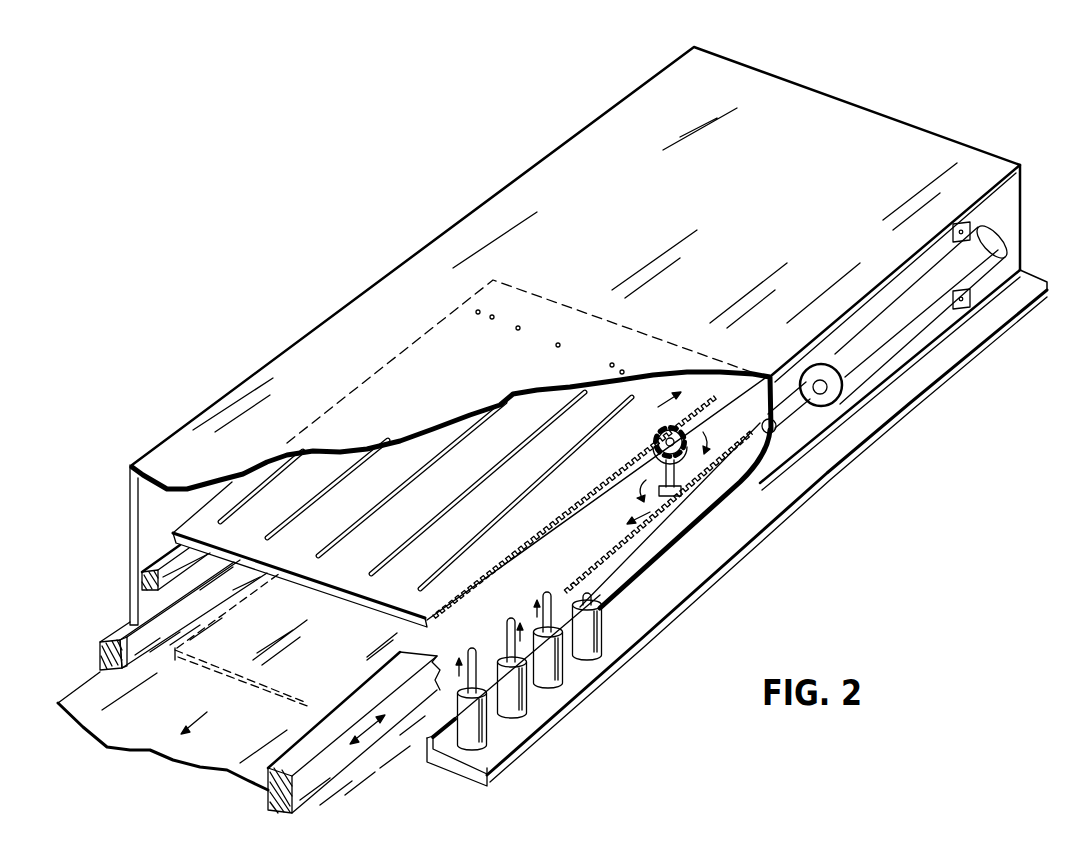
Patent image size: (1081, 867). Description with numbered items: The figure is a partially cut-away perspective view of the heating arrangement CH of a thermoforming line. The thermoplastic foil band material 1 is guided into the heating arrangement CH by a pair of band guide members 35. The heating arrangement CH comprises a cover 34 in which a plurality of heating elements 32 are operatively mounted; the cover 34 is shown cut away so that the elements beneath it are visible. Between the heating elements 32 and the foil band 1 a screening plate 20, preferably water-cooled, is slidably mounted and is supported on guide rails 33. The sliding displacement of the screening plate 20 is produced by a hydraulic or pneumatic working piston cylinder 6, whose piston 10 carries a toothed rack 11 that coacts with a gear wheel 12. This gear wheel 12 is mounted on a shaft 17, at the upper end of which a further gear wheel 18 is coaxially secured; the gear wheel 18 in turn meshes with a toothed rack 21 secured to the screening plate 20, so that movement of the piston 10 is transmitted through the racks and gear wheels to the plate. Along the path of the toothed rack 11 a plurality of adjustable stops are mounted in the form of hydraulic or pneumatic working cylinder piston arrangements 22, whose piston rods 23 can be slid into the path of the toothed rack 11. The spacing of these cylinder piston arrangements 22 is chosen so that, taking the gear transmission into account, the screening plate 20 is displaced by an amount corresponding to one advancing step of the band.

The heating arrangement CH is at (409, 208).
The thermoplastic foil band material 1 is at (100, 690).
The working piston cylinder 6 is at (903, 342).
The piston 10 is at (795, 408).
The toothed rack 11 is at (730, 470).
The gear wheel 12 is at (677, 490).
The shaft 17 is at (655, 491).
The gear wheel 18 is at (703, 425).
The screening plate 20 is at (200, 517).
The toothed rack 21 is at (582, 493).
The working cylinder piston arrangements 22 is at (560, 683).
The piston rods 23 is at (580, 597).
The heating elements 32 is at (238, 512).
The guide rails 33 is at (157, 566).
The cover 34 is at (337, 330).
The band guide members 35 is at (128, 628).